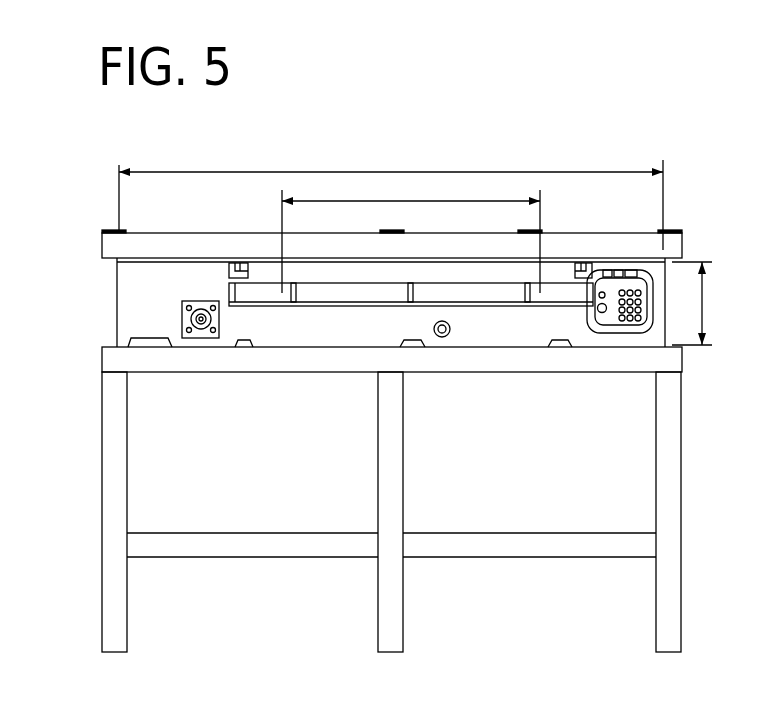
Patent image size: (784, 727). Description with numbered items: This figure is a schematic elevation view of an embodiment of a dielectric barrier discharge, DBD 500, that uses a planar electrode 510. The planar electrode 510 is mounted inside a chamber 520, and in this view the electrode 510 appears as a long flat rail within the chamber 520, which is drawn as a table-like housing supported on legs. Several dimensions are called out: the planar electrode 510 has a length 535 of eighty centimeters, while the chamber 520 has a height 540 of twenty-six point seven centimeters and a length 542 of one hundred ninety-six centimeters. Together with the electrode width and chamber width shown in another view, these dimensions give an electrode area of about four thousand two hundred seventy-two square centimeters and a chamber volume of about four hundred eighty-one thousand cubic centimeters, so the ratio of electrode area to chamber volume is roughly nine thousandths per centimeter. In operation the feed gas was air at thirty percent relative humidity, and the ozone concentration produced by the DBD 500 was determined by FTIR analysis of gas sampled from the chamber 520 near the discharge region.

The DBD 500 is at (316, 112).
The planar electrode 510 is at (472, 298).
The chamber 520 is at (560, 253).
The length 535 is at (418, 201).
The height 540 is at (704, 305).
The length 542 is at (389, 172).